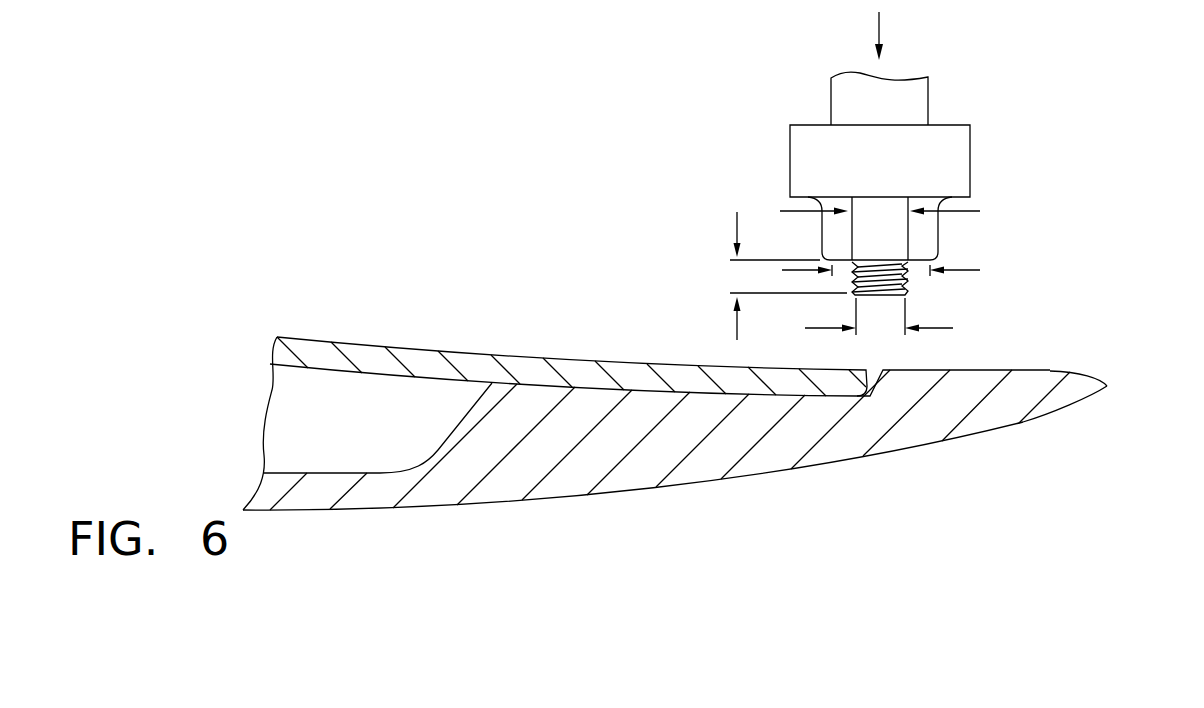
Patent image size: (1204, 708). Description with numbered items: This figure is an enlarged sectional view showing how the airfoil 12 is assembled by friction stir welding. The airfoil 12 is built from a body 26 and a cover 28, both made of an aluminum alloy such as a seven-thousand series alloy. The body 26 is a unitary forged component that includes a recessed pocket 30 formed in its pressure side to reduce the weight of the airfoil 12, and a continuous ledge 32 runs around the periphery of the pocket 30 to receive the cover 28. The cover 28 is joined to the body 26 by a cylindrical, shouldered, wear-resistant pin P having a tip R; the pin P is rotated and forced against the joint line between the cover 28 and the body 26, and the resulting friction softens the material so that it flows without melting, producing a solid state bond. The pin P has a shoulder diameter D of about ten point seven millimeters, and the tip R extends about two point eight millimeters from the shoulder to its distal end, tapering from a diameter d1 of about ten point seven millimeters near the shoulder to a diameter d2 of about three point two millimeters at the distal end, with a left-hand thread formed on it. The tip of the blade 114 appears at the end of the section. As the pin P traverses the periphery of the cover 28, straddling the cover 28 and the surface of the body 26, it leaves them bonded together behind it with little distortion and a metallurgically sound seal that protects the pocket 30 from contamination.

The airfoil 12 is at (690, 512).
The body 26 is at (779, 450).
The cover 28 is at (367, 352).
The recessed pocket 30 is at (372, 431).
The ledge 32 is at (657, 394).
The blade tip 114 is at (1108, 385).
The pin P is at (945, 146).
The diameter near the shoulder d1 is at (972, 212).
The shoulder diameter D is at (970, 268).
The tip R is at (908, 278).
The diameter at the distal end d2 is at (942, 328).